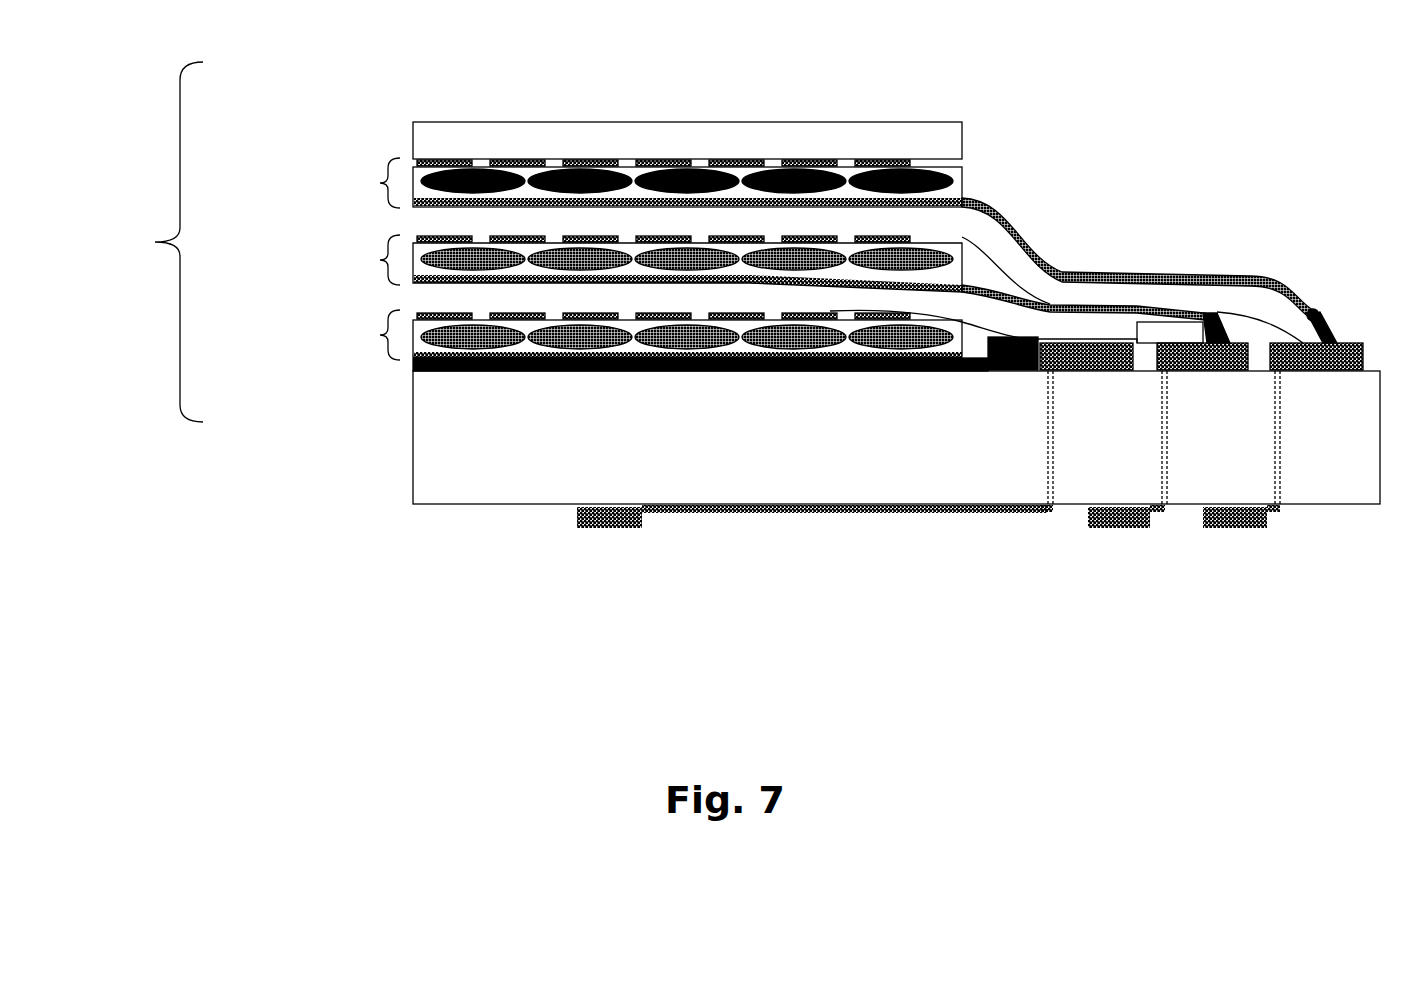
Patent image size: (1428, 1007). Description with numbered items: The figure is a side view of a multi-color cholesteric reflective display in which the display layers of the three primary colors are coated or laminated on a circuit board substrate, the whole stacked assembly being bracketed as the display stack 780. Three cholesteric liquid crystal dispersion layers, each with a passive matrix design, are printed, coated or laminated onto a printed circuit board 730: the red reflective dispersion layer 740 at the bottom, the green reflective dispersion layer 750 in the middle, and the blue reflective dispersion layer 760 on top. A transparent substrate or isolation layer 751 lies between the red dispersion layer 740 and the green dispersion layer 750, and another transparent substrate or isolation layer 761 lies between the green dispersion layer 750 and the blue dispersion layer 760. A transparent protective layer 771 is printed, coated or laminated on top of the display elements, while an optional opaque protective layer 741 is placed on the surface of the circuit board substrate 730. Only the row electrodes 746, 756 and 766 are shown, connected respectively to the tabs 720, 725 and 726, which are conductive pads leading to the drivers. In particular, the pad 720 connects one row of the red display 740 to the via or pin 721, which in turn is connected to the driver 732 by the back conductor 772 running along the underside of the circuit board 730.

The display stack 780 is at (133, 258).
The transparent protective layer 771 is at (473, 147).
The blue reflective cholesteric liquid crystal dispersion layer 760 is at (378, 183).
The transparent substrate or isolation layer 761 is at (447, 222).
The green reflective cholesteric liquid crystal dispersion layer 750 is at (372, 260).
The transparent substrate or isolation layer 751 is at (437, 298).
The red reflective cholesteric liquid crystal dispersion layer 740 is at (377, 335).
The opaque protective layer 741 is at (523, 371).
The row electrode 746 is at (782, 360).
The printed circuit board 730 is at (595, 422).
The driver 732 is at (608, 520).
The back conductor 772 is at (747, 512).
The via or pin 721 is at (1050, 433).
The tab 720 is at (1073, 360).
The tab 725 is at (1208, 358).
The tab 726 is at (1317, 360).
The row electrode 756 is at (978, 290).
The row electrode 766 is at (1200, 283).